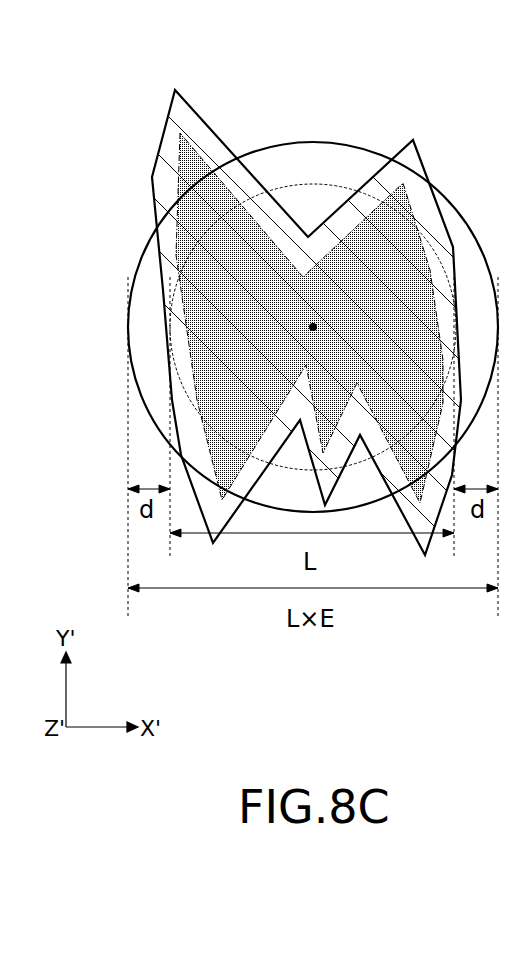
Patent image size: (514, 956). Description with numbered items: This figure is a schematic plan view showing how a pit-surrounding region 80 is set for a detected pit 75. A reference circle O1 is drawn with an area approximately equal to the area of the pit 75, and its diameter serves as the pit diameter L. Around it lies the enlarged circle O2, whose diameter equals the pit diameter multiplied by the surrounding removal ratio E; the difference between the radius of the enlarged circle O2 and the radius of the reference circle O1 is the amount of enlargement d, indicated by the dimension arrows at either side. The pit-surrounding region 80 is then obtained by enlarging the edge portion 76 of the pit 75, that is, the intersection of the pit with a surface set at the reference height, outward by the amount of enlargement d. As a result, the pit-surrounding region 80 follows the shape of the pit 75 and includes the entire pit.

The pit 75 is at (406, 210).
The edge portion 76 is at (420, 224).
The pit-surrounding region 80 is at (188, 122).
The reference circle O1 is at (343, 187).
The enlarged circle O2 is at (283, 143).